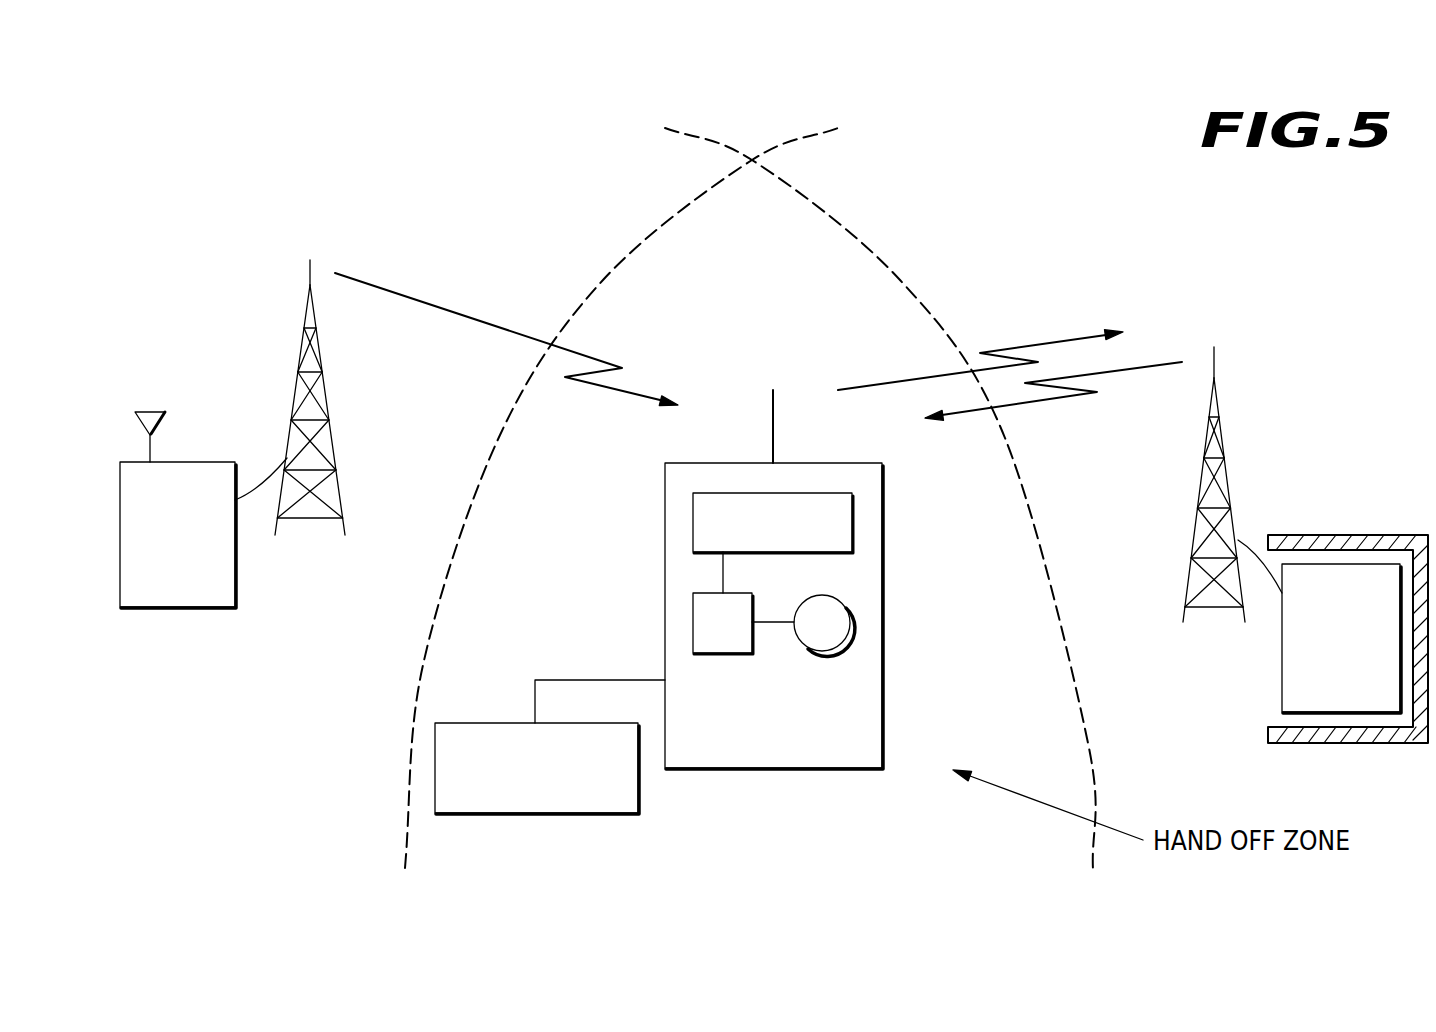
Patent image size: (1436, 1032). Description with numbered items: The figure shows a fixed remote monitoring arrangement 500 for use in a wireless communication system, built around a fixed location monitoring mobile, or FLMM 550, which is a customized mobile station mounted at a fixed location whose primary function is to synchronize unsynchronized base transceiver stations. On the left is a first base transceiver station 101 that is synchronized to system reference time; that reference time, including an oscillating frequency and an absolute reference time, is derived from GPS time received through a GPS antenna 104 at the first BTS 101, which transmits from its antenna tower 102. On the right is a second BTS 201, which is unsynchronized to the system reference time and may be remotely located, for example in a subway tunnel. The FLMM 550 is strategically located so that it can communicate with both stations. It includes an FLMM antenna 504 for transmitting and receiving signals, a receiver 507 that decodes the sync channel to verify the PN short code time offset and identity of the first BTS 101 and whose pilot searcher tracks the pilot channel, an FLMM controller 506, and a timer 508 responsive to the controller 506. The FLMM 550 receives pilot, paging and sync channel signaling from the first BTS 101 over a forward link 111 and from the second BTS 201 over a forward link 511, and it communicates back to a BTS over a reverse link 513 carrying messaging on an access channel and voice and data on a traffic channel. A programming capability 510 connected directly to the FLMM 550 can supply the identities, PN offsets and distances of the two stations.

The wireless communication system with hand off zone 500 is at (1315, 230).
The first base transceiver station 101 is at (235, 583).
The antenna tower 102 is at (300, 345).
The GPS antenna 104 is at (165, 415).
The forward link 111 is at (423, 300).
The second BTS 201 is at (1280, 675).
The FLMM antenna 504 is at (775, 432).
The FLMM controller 506 is at (690, 636).
The receiver 507 is at (852, 523).
The timer 508 is at (850, 622).
The programming capability 510 is at (480, 722).
The forward link 511 is at (1125, 370).
The reverse link 513 is at (1050, 343).
The fixed location monitoring mobile (FLMM) 550 is at (773, 579).